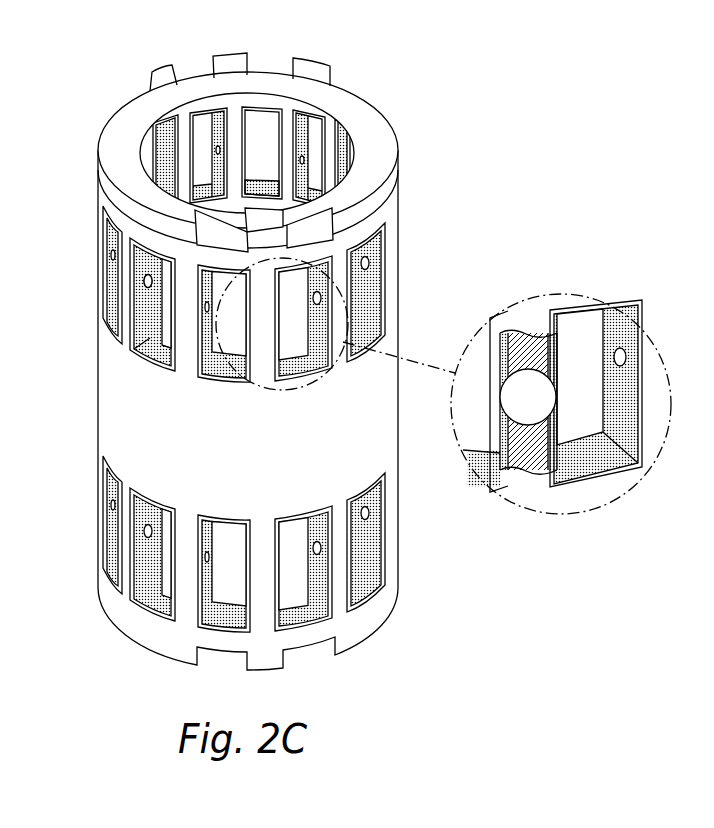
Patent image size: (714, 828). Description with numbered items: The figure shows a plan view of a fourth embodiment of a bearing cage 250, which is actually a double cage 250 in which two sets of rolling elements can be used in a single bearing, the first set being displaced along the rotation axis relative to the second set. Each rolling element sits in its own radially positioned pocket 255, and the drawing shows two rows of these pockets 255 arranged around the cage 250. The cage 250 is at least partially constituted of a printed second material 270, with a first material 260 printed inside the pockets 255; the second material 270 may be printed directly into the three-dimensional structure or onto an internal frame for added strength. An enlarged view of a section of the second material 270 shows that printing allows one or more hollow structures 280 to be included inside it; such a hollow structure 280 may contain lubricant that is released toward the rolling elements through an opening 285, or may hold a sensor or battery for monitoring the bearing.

The cage 250 is at (106, 54).
The pocket 255 is at (233, 327).
The first material 260 is at (147, 353).
The second material 270 is at (383, 118).
The hollow structure 280 is at (529, 388).
The opening 285 is at (146, 279).